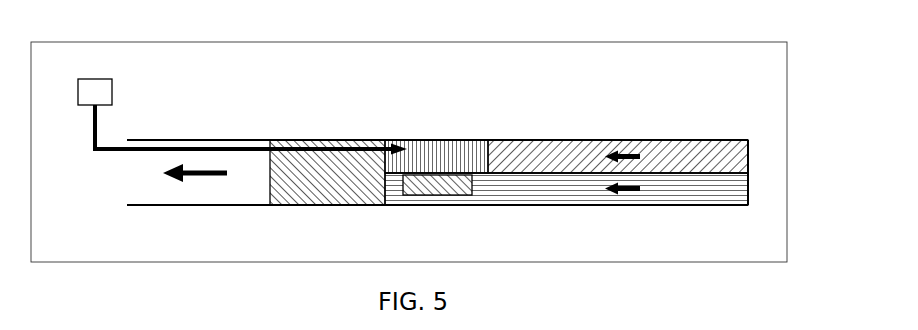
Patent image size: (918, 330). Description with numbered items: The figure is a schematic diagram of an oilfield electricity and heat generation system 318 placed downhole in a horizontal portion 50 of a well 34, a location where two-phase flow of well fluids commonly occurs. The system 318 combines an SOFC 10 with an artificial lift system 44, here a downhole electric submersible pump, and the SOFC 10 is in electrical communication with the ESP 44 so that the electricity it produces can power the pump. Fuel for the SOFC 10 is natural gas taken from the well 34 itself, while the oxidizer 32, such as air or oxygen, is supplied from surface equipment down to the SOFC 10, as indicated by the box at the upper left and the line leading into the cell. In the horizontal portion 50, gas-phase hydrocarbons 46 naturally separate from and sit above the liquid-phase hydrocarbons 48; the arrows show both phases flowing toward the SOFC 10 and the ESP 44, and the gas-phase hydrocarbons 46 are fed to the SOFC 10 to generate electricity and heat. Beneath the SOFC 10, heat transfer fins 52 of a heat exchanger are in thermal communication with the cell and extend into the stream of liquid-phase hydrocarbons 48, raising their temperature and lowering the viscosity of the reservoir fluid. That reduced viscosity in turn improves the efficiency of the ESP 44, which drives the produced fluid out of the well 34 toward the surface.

The oilfield electricity and heat generation system 318 is at (241, 98).
The oxidizer 32 is at (88, 100).
The well 34 is at (148, 189).
The horizontal portion 50 is at (659, 112).
The artificial lift system 44 is at (317, 180).
The SOFC 10 is at (429, 162).
The gas-phase hydrocarbons 46 is at (682, 164).
The liquid-phase hydrocarbons 48 is at (682, 198).
The heat transfer fins 52 is at (425, 190).